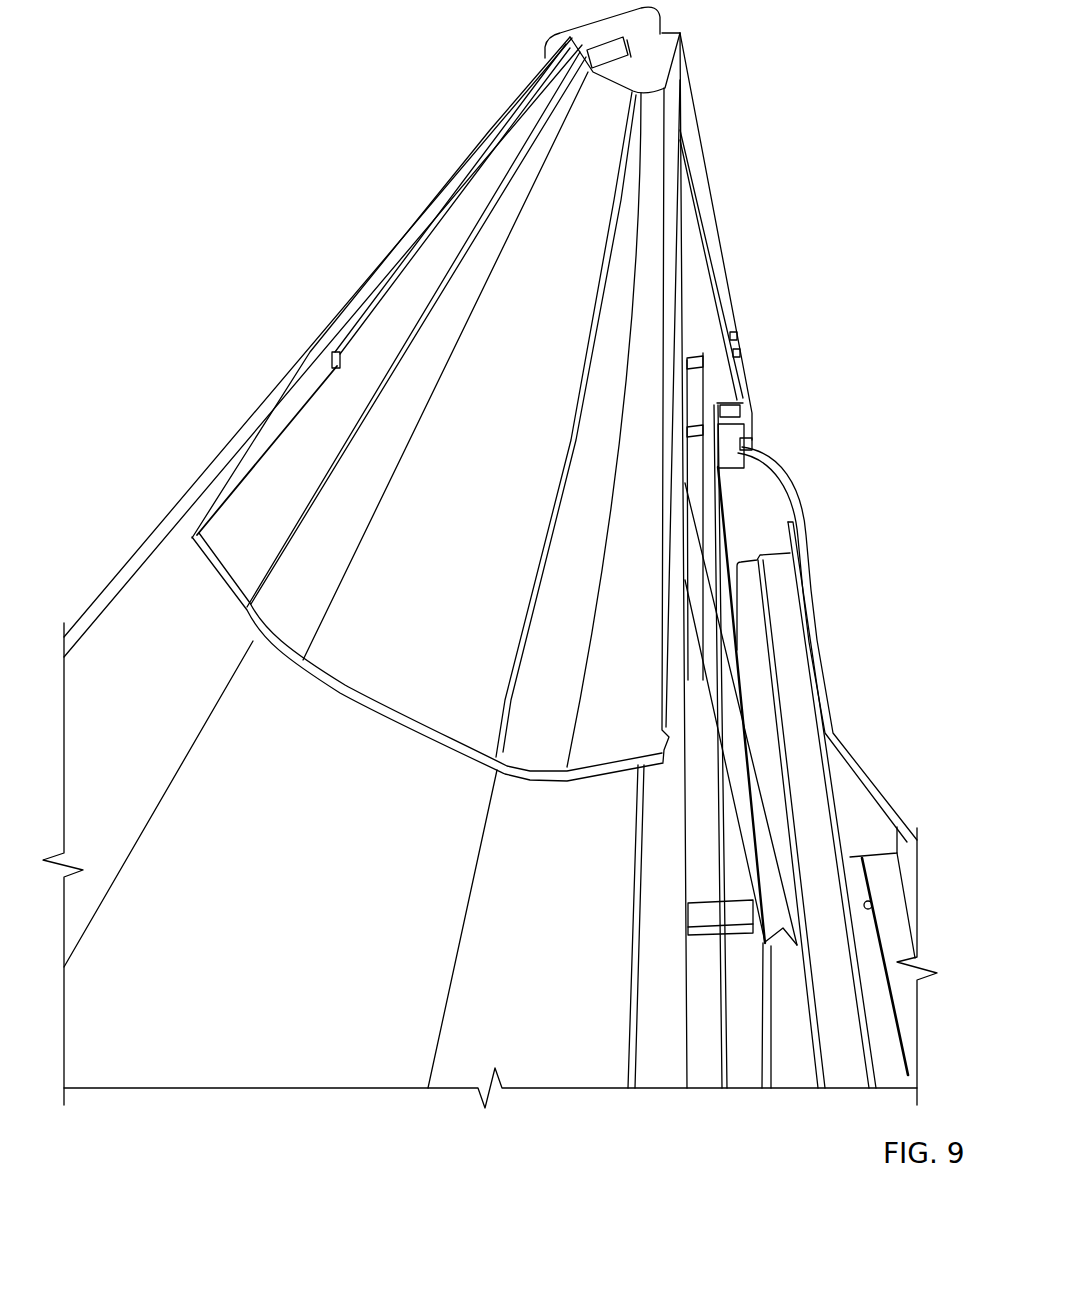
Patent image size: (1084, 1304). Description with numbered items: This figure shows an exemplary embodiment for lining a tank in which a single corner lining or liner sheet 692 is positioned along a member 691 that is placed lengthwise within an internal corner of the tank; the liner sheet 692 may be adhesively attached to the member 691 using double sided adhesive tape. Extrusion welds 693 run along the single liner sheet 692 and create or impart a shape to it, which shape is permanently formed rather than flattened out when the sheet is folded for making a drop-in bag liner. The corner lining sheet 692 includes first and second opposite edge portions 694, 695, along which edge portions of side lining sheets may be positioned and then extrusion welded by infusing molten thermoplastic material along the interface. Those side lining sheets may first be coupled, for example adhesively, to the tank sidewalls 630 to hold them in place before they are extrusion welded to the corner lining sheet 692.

The tank sidewalls 630 is at (104, 646).
The member 691 is at (443, 888).
The lining sheet 692 is at (572, 290).
The extrusion welds 693 is at (357, 483).
The first edge portion 694 is at (460, 227).
The second edge portion 695 is at (653, 164).